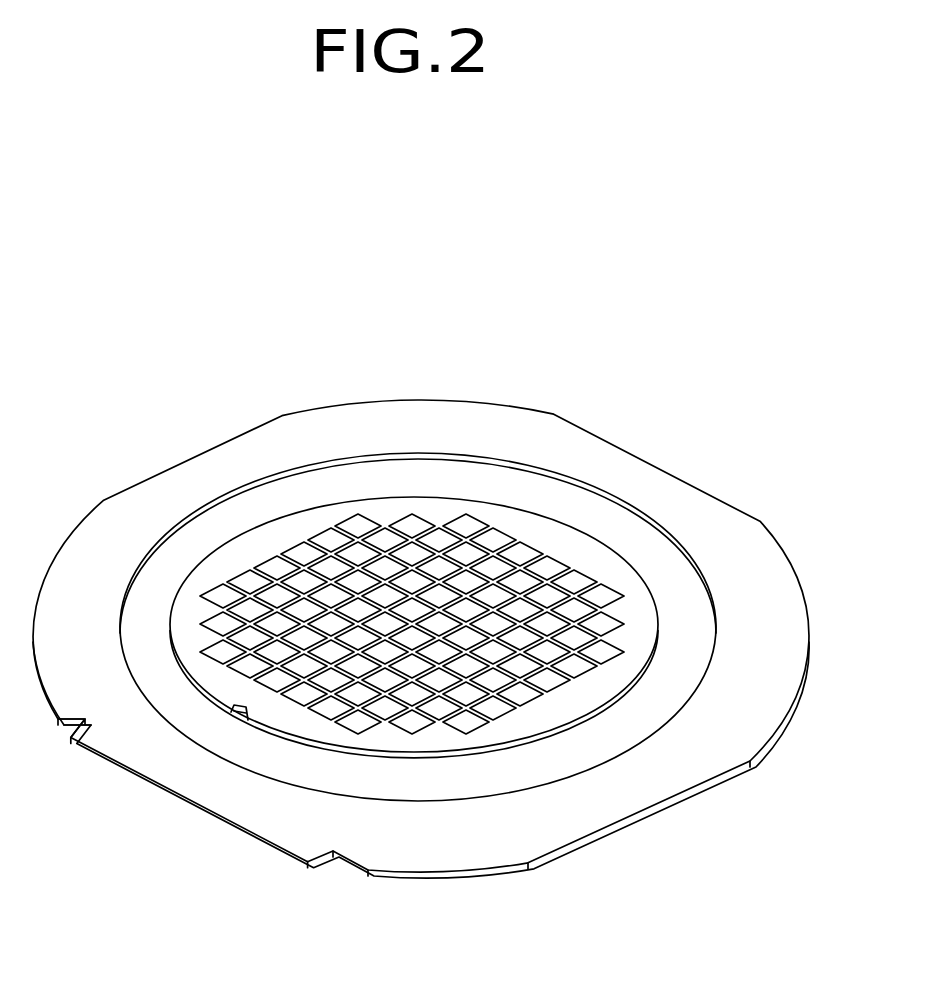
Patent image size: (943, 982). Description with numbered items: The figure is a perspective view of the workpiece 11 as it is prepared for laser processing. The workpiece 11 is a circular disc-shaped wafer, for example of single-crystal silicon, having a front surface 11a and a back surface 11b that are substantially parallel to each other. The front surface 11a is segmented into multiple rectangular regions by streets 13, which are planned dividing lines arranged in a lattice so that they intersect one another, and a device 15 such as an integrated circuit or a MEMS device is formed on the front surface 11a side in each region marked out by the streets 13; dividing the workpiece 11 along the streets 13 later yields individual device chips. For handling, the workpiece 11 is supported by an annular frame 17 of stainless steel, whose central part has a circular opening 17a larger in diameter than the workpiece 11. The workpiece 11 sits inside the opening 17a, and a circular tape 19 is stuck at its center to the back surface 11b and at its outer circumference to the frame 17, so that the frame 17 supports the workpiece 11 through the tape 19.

The workpiece 11 is at (406, 635).
The front surface 11a is at (567, 545).
The back surface 11b is at (535, 747).
The streets 13 is at (450, 549).
The device 15 is at (467, 523).
The annular frame 17 is at (421, 656).
The opening 17a is at (206, 746).
The tape 19 is at (157, 587).